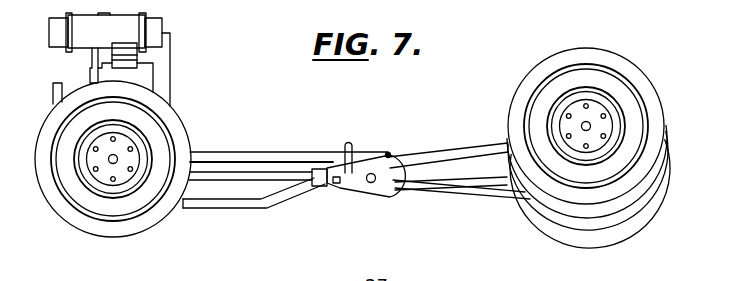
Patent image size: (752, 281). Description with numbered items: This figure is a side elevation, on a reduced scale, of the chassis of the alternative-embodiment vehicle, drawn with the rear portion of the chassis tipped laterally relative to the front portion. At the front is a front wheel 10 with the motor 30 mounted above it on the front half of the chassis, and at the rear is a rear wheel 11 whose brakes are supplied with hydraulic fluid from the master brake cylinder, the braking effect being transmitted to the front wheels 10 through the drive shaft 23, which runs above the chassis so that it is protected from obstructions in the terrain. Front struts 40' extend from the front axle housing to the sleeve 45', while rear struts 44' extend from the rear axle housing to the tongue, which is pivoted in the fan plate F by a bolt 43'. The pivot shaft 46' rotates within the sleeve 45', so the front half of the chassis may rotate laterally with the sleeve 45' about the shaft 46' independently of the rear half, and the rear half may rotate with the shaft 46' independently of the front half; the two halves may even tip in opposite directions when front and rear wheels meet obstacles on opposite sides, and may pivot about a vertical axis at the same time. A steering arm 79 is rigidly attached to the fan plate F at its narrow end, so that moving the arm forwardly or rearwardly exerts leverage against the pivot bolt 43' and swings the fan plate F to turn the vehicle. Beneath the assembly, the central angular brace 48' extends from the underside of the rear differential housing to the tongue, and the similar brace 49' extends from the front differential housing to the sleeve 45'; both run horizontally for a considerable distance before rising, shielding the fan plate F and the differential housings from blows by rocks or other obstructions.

The front wheels 10 is at (48, 182).
The rear wheels 11 is at (654, 127).
The motor 30 is at (166, 73).
The drive shaft 23 is at (242, 151).
The front struts 40' is at (250, 188).
The center brace 49' is at (254, 208).
The sleeve 45' is at (305, 198).
The pivot shaft 46' is at (342, 202).
The bolt 43' is at (366, 191).
The steering arm 79 is at (357, 133).
The fan plate F is at (389, 154).
The rear struts 44' is at (459, 170).
The central angular brace 48' is at (451, 202).